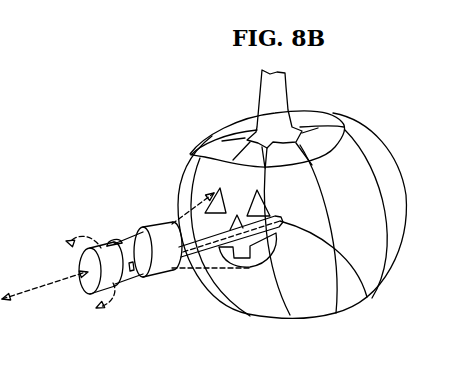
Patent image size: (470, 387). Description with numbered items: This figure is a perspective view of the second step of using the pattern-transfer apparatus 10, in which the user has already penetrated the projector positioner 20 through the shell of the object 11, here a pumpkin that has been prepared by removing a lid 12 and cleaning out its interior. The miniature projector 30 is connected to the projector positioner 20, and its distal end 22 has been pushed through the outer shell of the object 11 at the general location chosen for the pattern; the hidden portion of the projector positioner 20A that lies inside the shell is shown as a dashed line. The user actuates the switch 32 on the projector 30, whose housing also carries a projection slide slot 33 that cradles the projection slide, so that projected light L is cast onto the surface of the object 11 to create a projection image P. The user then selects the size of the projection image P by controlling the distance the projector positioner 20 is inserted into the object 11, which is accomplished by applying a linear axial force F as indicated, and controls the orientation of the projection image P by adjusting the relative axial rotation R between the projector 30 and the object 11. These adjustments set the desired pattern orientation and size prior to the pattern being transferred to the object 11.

The invention in its entirety 10 is at (170, 98).
The object 11 is at (0, 133).
The lid 12 is at (313, 120).
The projector positioner 20 is at (193, 237).
The hidden portion of the projector positioner 20A is at (320, 318).
The distal end of the projector positioner 22 is at (367, 297).
The projector 30 is at (123, 290).
The switch 32 is at (113, 244).
The projection slide slot 33 is at (131, 272).
The projection image P is at (243, 182).
The linear axial force F is at (45, 288).
The relative axial rotation R is at (82, 272).
The projected light L is at (210, 268).